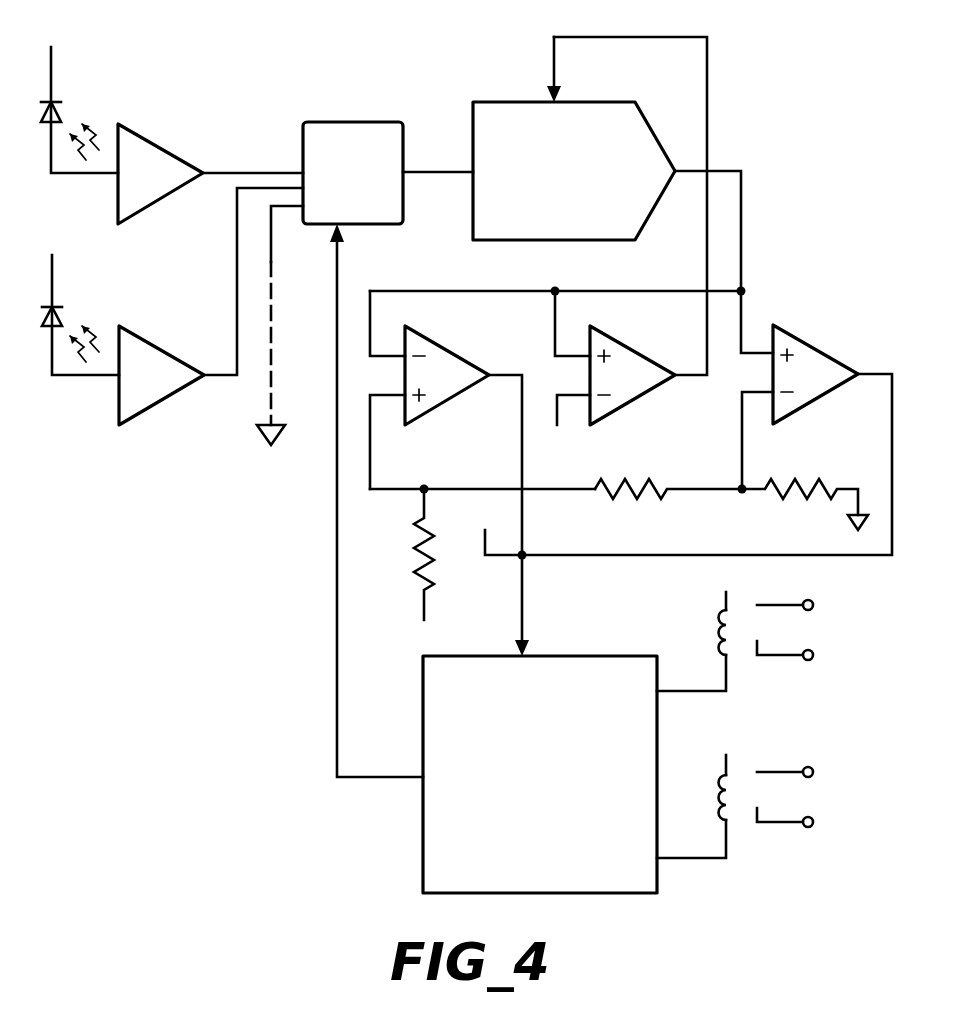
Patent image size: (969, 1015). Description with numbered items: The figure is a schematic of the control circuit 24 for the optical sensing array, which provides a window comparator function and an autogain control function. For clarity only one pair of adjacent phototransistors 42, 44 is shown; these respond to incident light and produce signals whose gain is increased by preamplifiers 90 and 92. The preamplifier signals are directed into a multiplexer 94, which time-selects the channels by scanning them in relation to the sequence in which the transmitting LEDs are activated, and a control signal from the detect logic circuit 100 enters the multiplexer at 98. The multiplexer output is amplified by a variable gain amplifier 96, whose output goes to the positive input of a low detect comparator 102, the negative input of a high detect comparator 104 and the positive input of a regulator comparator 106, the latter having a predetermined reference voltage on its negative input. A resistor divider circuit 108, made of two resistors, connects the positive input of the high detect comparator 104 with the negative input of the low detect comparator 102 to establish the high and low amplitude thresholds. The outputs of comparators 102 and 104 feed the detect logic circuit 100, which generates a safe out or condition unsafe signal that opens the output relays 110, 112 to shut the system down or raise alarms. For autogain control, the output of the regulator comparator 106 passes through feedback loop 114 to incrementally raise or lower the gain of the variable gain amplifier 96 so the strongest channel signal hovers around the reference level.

The control circuit 24 is at (247, 668).
The phototransistor 42 is at (65, 315).
The phototransistor 44 is at (65, 110).
The preamplifier 90 is at (165, 400).
The preamplifier 92 is at (178, 150).
The multiplexer 94 is at (387, 121).
The variable gain amplifier 96 is at (652, 127).
The multiplexer control input 98 is at (337, 268).
The detect logic circuit 100 is at (423, 840).
The low detect comparator 102 is at (828, 352).
The high detect comparator 104 is at (457, 352).
The regulator comparator 106 is at (642, 352).
The resistor divider circuit 108 is at (670, 535).
The output relay 110 is at (770, 680).
The output relay 112 is at (771, 757).
The feedback loop 114 is at (708, 132).